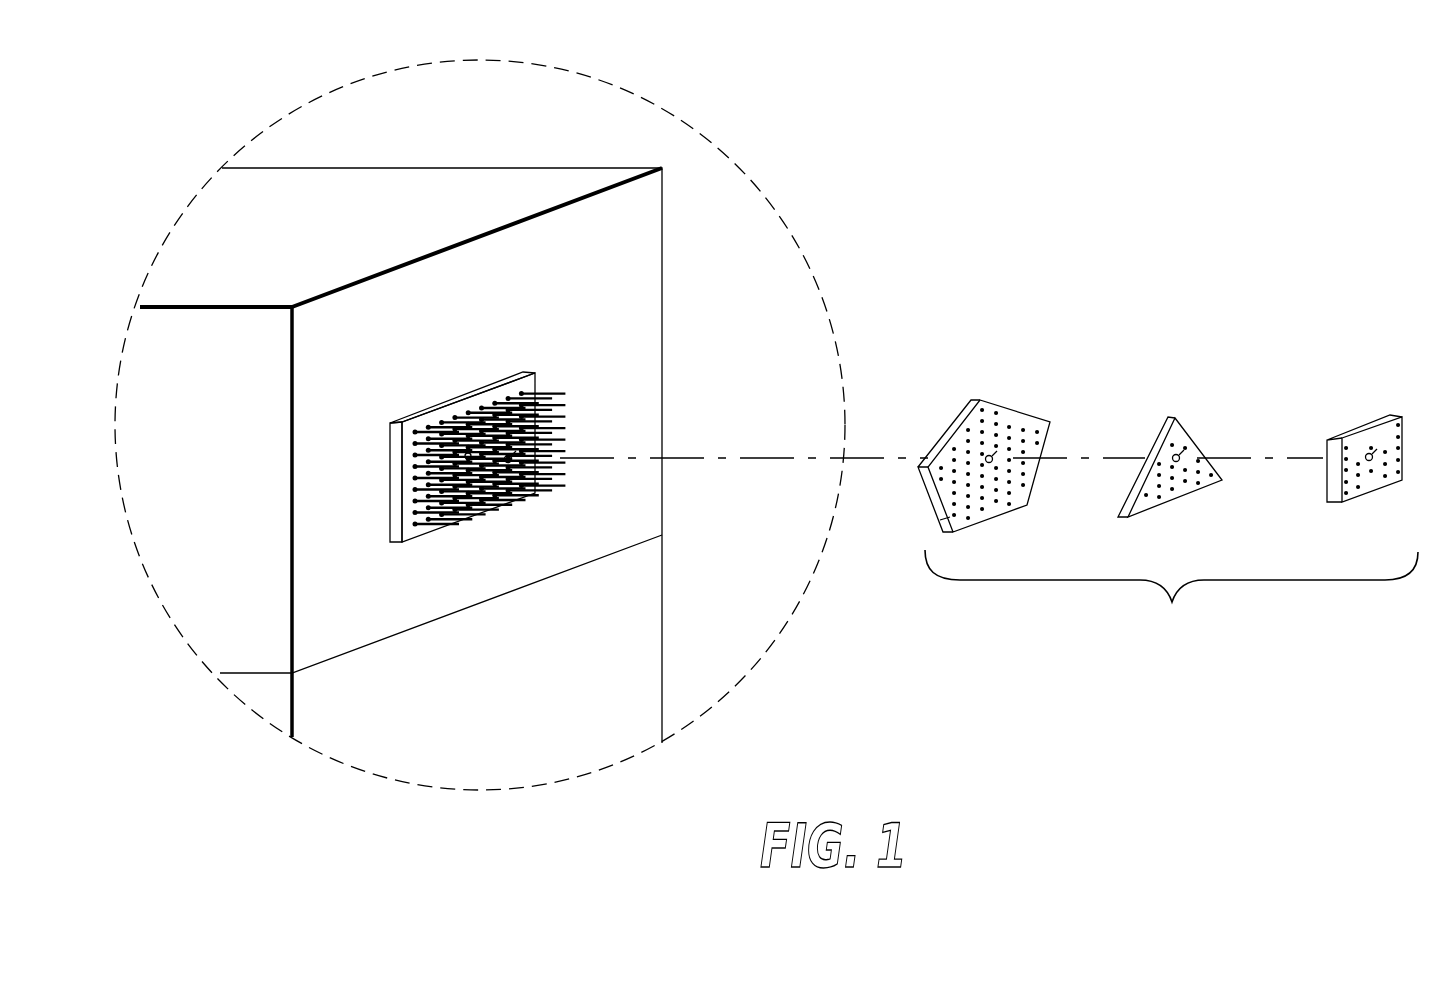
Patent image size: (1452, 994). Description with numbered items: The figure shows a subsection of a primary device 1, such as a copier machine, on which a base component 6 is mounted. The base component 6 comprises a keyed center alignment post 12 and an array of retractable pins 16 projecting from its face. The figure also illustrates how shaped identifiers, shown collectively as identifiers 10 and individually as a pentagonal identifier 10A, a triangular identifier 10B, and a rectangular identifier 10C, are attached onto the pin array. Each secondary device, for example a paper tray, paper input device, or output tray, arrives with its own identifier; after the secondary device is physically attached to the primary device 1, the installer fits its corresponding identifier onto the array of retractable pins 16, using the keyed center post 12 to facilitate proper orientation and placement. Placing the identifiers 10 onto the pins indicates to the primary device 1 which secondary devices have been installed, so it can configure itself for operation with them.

The primary device 1 is at (648, 270).
The base component 6 is at (397, 453).
The array of retractable pins 16 is at (562, 402).
The keyed center alignment post 12 is at (500, 460).
The shaped identifiers 10 is at (1195, 642).
The pentagonal shaped identifier 10A is at (962, 418).
The triangular shaped identifier 10B is at (1158, 440).
The rectangular shaped identifier 10C is at (1350, 432).